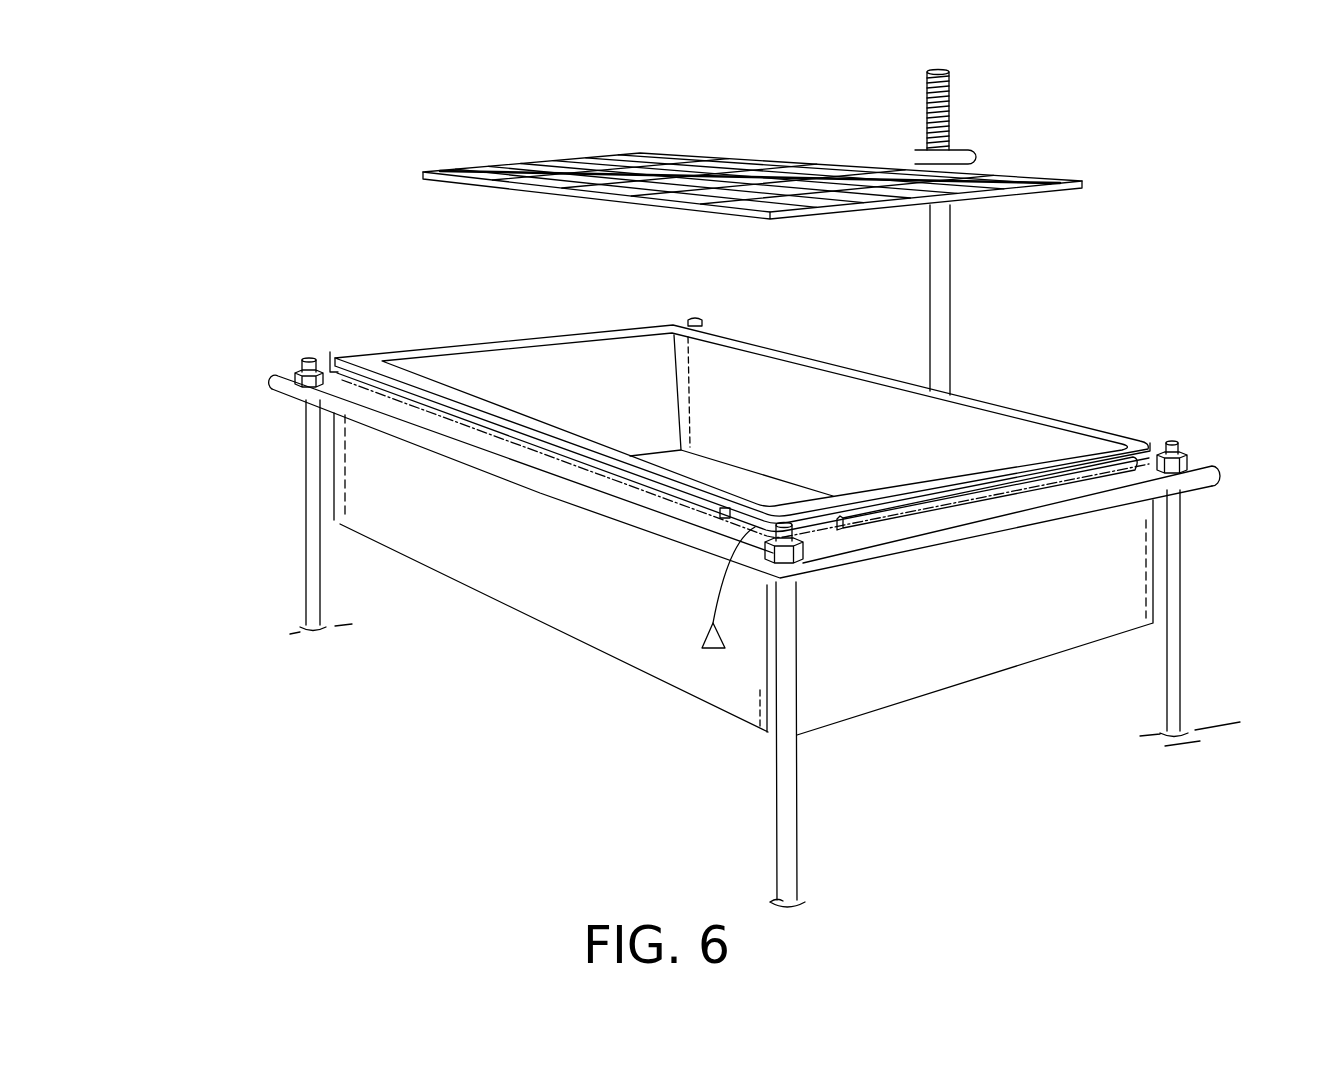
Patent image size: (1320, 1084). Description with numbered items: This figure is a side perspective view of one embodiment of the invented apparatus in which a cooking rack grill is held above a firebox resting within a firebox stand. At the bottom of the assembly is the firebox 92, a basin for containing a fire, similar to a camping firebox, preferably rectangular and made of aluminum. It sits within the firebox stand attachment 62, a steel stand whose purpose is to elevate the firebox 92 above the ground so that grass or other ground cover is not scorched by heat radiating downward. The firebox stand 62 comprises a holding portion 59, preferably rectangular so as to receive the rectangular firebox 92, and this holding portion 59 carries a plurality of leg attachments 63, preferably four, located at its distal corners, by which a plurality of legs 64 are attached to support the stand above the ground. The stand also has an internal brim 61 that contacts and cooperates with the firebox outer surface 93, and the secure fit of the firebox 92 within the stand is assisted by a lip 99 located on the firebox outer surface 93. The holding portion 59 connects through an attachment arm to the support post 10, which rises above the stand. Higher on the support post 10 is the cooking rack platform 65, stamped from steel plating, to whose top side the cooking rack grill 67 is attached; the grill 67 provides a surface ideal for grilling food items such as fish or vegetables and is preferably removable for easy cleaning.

The support post 10 is at (947, 281).
The holding portion 59 is at (620, 497).
The internal brim 61 is at (835, 528).
The firebox stand attachment 62 is at (530, 498).
The leg attachments 63 is at (698, 317).
The legs 64 is at (305, 535).
The cooking rack platform 65 is at (1040, 198).
The cooking rack grill 67 is at (1080, 185).
The firebox 92 is at (1007, 650).
The firebox outer surface 93 is at (1076, 592).
The lip 99 is at (707, 512).